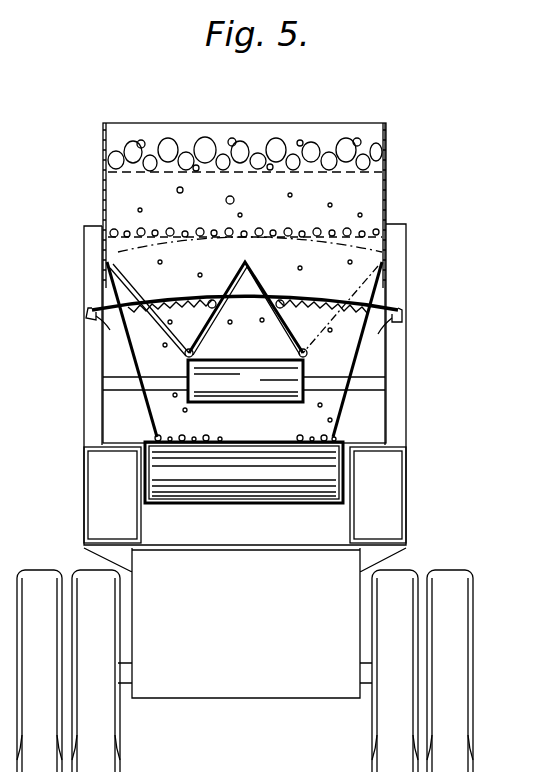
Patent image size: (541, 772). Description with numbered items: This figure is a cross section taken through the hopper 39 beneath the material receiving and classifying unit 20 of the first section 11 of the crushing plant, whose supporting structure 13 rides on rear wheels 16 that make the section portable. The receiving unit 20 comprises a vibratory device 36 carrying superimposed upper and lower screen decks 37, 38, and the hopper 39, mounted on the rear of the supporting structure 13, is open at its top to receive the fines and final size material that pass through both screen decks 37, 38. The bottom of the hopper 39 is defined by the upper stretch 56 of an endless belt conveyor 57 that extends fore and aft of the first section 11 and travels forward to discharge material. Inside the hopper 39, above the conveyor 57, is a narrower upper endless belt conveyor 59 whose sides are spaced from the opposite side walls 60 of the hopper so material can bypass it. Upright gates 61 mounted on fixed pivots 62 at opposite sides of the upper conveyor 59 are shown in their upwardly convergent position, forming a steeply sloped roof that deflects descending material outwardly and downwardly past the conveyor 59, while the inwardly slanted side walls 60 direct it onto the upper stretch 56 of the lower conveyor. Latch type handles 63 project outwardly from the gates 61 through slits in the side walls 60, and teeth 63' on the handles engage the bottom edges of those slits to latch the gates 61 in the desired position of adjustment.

The material receiving and classifying unit 20 is at (358, 109).
The vibratory device 36 is at (387, 182).
The upper screen deck 37 is at (120, 172).
The lower screen deck 38 is at (130, 240).
The first section 11 is at (424, 209).
The hopper 39 is at (426, 293).
The supporting structure 13 is at (408, 520).
The fixed pivots 62 is at (300, 350).
The upright gates 61 is at (275, 301).
The side walls 60 is at (135, 338).
The latch type handles 63 is at (248, 308).
The teeth 63' is at (250, 331).
The upper endless belt conveyor 59 is at (241, 355).
The upper stretch 56 is at (243, 417).
The endless belt conveyor 57 is at (230, 506).
The rear wheels 16 is at (487, 607).